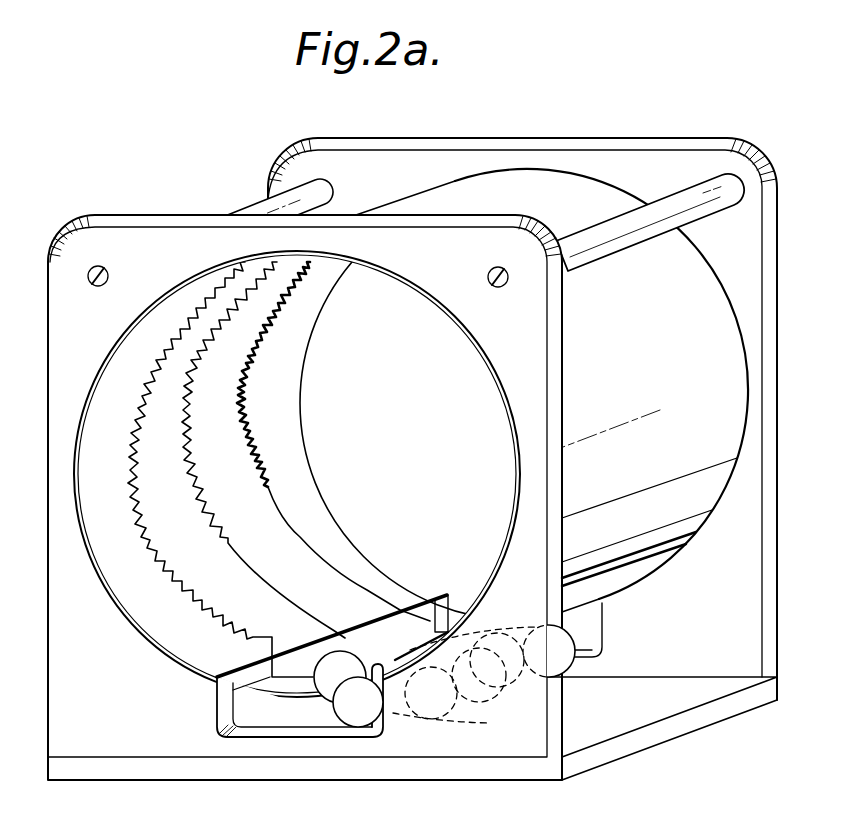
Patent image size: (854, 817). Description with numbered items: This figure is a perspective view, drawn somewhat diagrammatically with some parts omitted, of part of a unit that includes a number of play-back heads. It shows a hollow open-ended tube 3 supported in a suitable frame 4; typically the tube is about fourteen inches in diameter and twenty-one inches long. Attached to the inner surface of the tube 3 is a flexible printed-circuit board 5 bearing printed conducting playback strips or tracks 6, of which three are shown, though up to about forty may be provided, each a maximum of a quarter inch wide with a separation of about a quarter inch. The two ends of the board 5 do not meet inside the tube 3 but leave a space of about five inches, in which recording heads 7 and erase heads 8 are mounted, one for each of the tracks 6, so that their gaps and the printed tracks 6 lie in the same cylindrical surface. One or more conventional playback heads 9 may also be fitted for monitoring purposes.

The hollow open-ended tube 3 is at (683, 257).
The frame 4 is at (412, 497).
The flexible printed-circuit board 5 is at (293, 455).
The printed conducting playback tracks 6 is at (245, 445).
The recording heads 7 is at (357, 702).
The erase heads 8 is at (470, 722).
The playback heads 9 is at (327, 678).